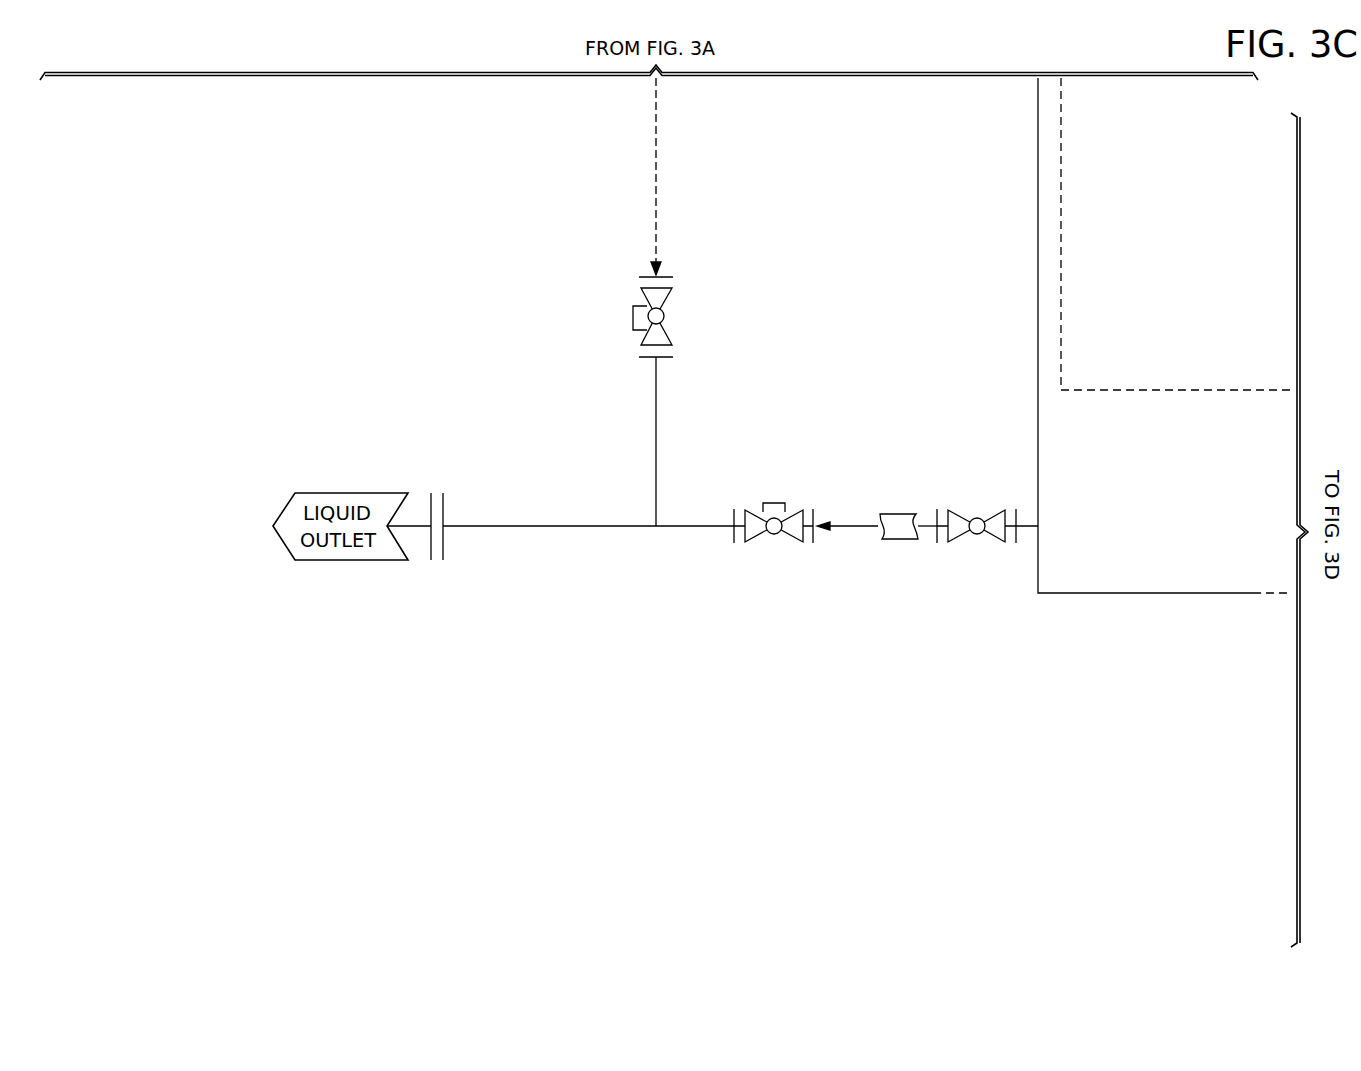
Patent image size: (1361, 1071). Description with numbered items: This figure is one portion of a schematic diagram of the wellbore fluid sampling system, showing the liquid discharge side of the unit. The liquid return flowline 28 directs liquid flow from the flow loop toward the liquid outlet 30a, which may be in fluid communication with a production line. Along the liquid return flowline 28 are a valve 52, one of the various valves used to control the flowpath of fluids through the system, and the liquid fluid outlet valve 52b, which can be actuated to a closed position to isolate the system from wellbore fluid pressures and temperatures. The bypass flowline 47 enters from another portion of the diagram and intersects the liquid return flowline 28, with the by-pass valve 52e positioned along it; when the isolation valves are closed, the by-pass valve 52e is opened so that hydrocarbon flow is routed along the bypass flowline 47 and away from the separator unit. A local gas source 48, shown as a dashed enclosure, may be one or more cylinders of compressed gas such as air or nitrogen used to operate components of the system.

The bypass flowline 47 is at (655, 200).
The local gas source 48 is at (1062, 255).
The by-pass valve 52e is at (666, 316).
The liquid fluid outlet valve 52b is at (775, 535).
The valve 52 is at (978, 518).
The liquid return flowline 28 is at (848, 527).
The liquid outlet 30a is at (438, 564).